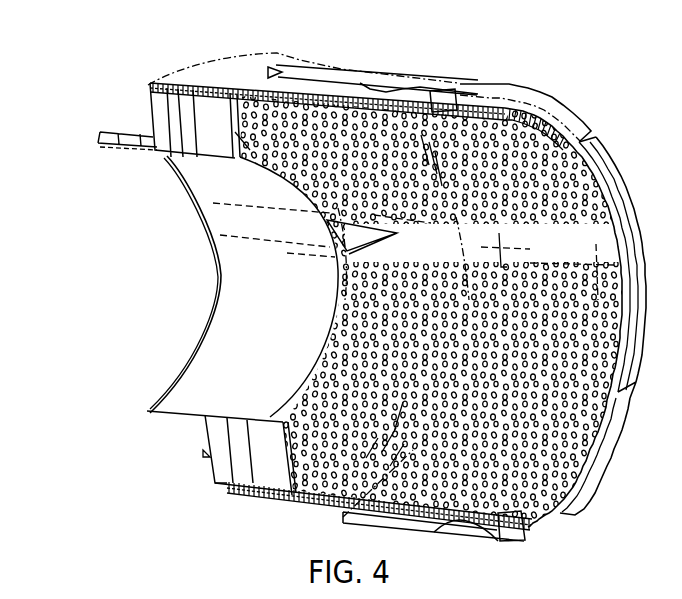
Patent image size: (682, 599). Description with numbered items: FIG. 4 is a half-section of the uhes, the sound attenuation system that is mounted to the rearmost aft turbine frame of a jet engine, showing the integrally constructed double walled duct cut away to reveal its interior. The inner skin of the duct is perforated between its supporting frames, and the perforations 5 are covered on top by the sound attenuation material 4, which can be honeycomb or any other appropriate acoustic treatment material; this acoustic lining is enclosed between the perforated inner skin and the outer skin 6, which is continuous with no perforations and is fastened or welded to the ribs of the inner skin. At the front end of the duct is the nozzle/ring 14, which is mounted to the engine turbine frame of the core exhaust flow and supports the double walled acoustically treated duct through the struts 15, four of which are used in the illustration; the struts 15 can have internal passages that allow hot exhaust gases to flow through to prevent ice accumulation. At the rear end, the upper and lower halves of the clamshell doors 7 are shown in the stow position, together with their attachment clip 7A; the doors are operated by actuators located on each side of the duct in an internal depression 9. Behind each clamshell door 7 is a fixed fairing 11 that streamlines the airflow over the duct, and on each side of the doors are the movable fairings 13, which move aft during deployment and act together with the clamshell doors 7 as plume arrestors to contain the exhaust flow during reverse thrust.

The sound attenuation material 4 is at (229, 94).
The perforations 5 is at (310, 181).
The outer skin 6 is at (264, 498).
The clamshell doors 7 is at (384, 67).
The clip 7A is at (360, 84).
The internal depression 9 is at (518, 238).
The fixed fairing 11 is at (572, 104).
The movable fairings 13 is at (620, 164).
The nozzle/ring 14 is at (102, 129).
The struts 15 is at (219, 161).